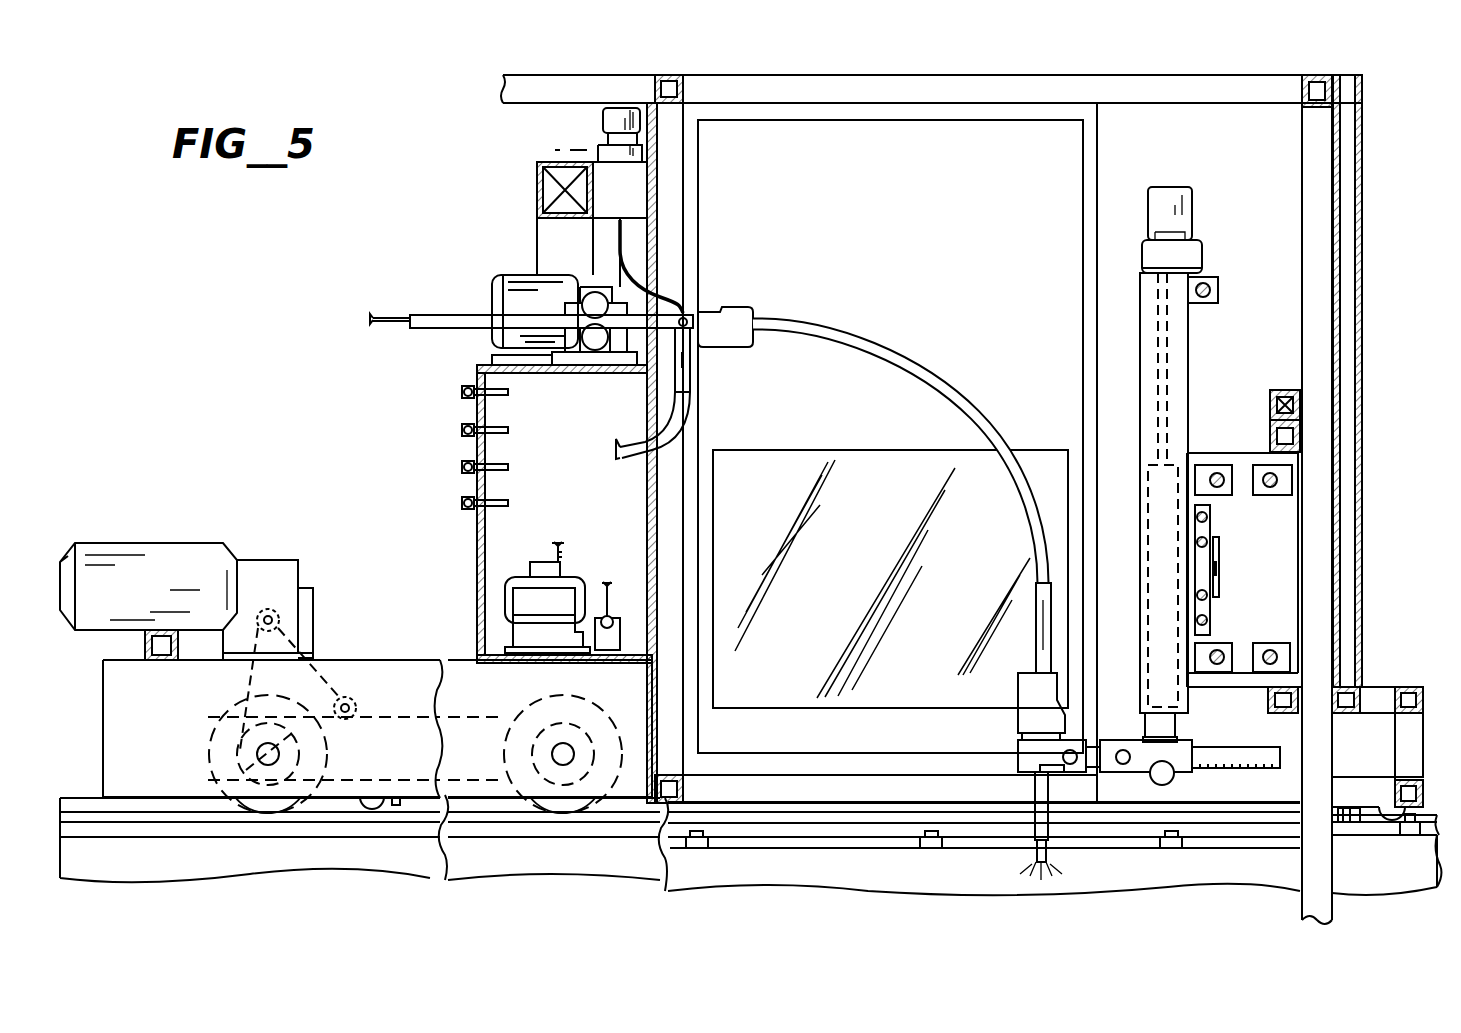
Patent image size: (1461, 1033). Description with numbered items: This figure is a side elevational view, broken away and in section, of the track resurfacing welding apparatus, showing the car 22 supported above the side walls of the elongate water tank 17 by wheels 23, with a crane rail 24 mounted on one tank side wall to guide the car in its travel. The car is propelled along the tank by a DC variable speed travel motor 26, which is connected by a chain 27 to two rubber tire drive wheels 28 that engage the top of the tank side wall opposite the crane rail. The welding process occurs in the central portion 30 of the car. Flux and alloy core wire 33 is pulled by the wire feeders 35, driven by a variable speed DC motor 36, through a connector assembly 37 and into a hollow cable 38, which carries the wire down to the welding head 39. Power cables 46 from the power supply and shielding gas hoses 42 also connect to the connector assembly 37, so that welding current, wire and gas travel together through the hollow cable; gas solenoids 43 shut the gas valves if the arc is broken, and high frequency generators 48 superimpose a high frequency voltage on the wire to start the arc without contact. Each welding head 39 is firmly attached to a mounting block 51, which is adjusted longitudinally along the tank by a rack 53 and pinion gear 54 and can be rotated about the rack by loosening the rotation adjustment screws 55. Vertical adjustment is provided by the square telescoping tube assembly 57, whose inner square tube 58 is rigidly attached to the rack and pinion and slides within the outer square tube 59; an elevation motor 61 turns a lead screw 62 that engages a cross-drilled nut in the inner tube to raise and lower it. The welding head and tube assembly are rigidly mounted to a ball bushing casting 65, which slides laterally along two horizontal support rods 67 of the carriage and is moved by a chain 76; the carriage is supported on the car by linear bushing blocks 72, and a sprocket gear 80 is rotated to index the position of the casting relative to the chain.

The tank 17 is at (258, 860).
The car 22 is at (1382, 414).
The wheels 23 is at (1390, 806).
The crane rail 24 is at (1375, 824).
The travel motor 26 is at (180, 567).
The chain 27 is at (396, 715).
The drive wheels 28 is at (220, 725).
The central portion 30 is at (1363, 282).
The wire 33 is at (386, 317).
The wire feeders 35 is at (598, 342).
The motor 36 is at (515, 283).
The connector assembly 37 is at (714, 358).
The hollow cable 38 is at (945, 373).
The welding head 39 is at (1033, 794).
The hoses 42 is at (666, 289).
The gas solenoids 43 is at (612, 129).
The power cables 46 is at (468, 473).
The high frequency generators 48 is at (578, 579).
The mounting block 51 is at (1020, 747).
The rack 53 is at (1235, 765).
The pinion gear 54 is at (1166, 775).
The rotation adjustment screws 55 is at (1072, 762).
The telescoping tube assembly 57 is at (1198, 406).
The inner square tube 58 is at (1180, 722).
The outer square tube 59 is at (1140, 407).
The elevation motor 61 is at (1193, 211).
The lead screw 62 is at (1172, 335).
The ball bushing casting 65 is at (1210, 523).
The horizontal support rods 67 is at (1218, 465).
The linear bushing blocks 72 is at (1260, 465).
The chain 76 is at (1219, 546).
The sprocket gear 80 is at (1210, 569).